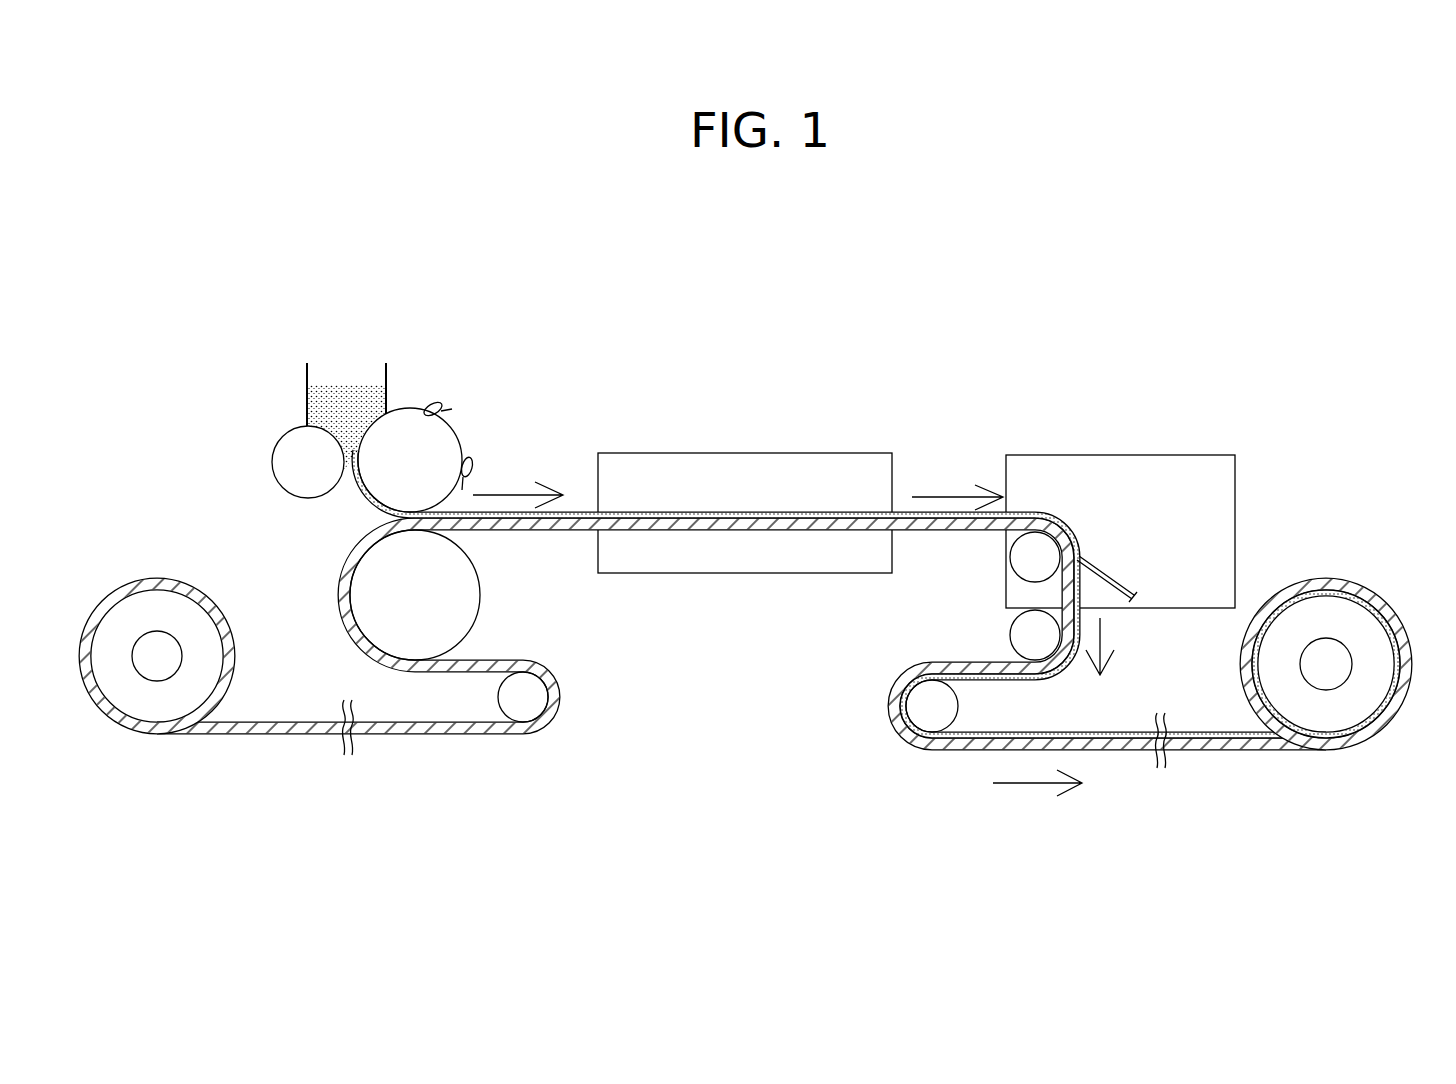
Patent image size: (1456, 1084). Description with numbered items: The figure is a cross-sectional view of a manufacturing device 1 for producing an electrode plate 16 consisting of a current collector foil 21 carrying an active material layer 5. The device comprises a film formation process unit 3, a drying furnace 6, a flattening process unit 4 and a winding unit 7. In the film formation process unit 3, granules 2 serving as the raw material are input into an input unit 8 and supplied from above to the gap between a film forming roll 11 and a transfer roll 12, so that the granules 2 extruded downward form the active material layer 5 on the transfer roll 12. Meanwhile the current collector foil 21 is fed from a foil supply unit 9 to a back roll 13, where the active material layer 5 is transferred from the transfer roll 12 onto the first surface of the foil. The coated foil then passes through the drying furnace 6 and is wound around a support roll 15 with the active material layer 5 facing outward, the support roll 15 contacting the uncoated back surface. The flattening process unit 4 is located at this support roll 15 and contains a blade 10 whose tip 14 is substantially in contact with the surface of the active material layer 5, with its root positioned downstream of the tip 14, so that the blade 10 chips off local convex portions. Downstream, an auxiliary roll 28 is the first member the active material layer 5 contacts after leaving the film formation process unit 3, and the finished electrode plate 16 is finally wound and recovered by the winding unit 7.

The manufacturing device 1 is at (1168, 290).
The granules 2 is at (341, 400).
The film formation process unit 3 is at (533, 387).
The flattening process unit 4 is at (1145, 483).
The active material layer 5 is at (355, 503).
The drying furnace 6 is at (820, 480).
The winding unit 7 is at (1362, 628).
The input unit 8 is at (368, 367).
The foil supply unit 9 is at (133, 618).
The blade 10 is at (1120, 577).
The film forming roll 11 is at (300, 473).
The transfer roll 12 is at (445, 445).
The back roll 13 is at (470, 598).
The tip 14 is at (1078, 558).
The support roll 15 is at (1022, 568).
The electrode plate 16 is at (1230, 750).
The current collector foil 21 is at (432, 738).
The auxiliary roll 28 is at (918, 712).